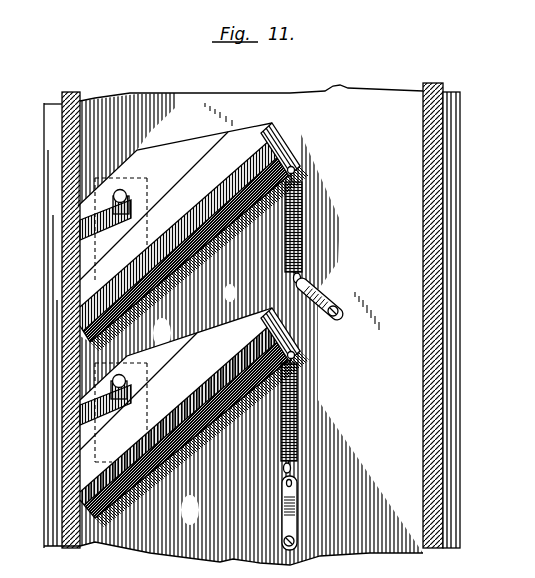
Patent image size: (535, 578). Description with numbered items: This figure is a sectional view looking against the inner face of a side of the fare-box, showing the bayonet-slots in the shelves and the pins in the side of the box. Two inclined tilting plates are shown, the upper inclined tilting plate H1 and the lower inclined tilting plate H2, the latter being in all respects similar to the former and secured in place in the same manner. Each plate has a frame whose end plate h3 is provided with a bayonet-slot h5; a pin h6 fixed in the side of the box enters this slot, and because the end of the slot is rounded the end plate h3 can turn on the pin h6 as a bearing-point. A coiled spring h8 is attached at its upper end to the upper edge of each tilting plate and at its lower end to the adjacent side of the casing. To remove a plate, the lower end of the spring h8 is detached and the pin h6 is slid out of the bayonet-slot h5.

The end plate h3 is at (178, 307).
The bayonet-slot h5 is at (134, 214).
The pin h6 is at (121, 192).
The coiled spring h8 is at (302, 260).
The inclined tilting plate H1 is at (203, 247).
The inclined tilting plate H2 is at (203, 428).